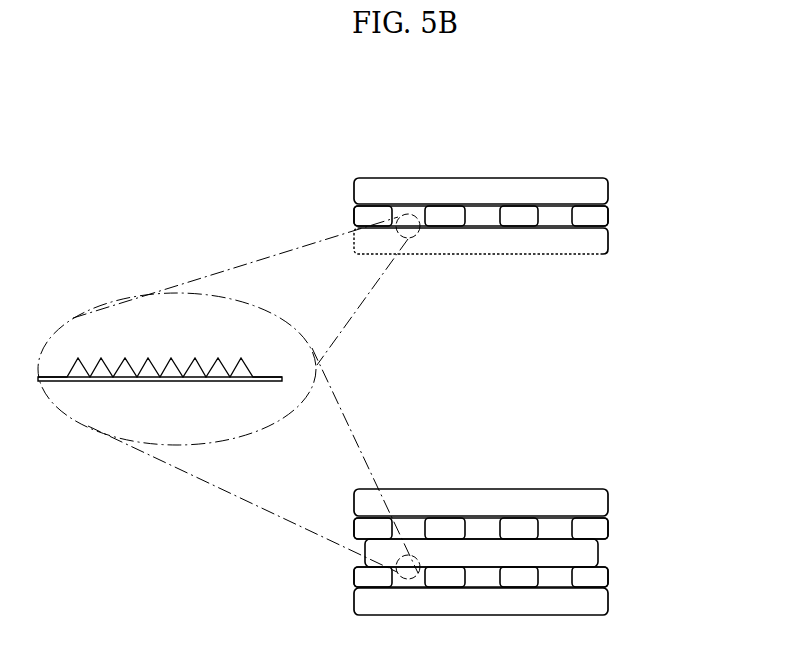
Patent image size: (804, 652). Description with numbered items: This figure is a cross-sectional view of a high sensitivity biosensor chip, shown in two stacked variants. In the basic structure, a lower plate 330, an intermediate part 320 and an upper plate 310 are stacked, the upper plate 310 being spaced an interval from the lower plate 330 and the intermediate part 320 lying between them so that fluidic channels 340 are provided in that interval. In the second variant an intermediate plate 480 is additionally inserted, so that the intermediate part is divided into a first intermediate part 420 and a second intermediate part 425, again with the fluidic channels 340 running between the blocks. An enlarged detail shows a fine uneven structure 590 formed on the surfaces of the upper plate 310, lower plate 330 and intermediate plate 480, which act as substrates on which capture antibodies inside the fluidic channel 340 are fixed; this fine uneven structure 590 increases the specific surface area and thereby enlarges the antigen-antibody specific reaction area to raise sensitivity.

The upper plate 310 is at (597, 192).
The intermediate part 320 is at (597, 215).
The lower plate 330 is at (597, 240).
The fluidic channel 340 is at (483, 218).
The second intermediate part 425 is at (597, 528).
The intermediate plate 480 is at (478, 552).
The first intermediate part 420 is at (597, 577).
The fine uneven structure 590 is at (172, 357).